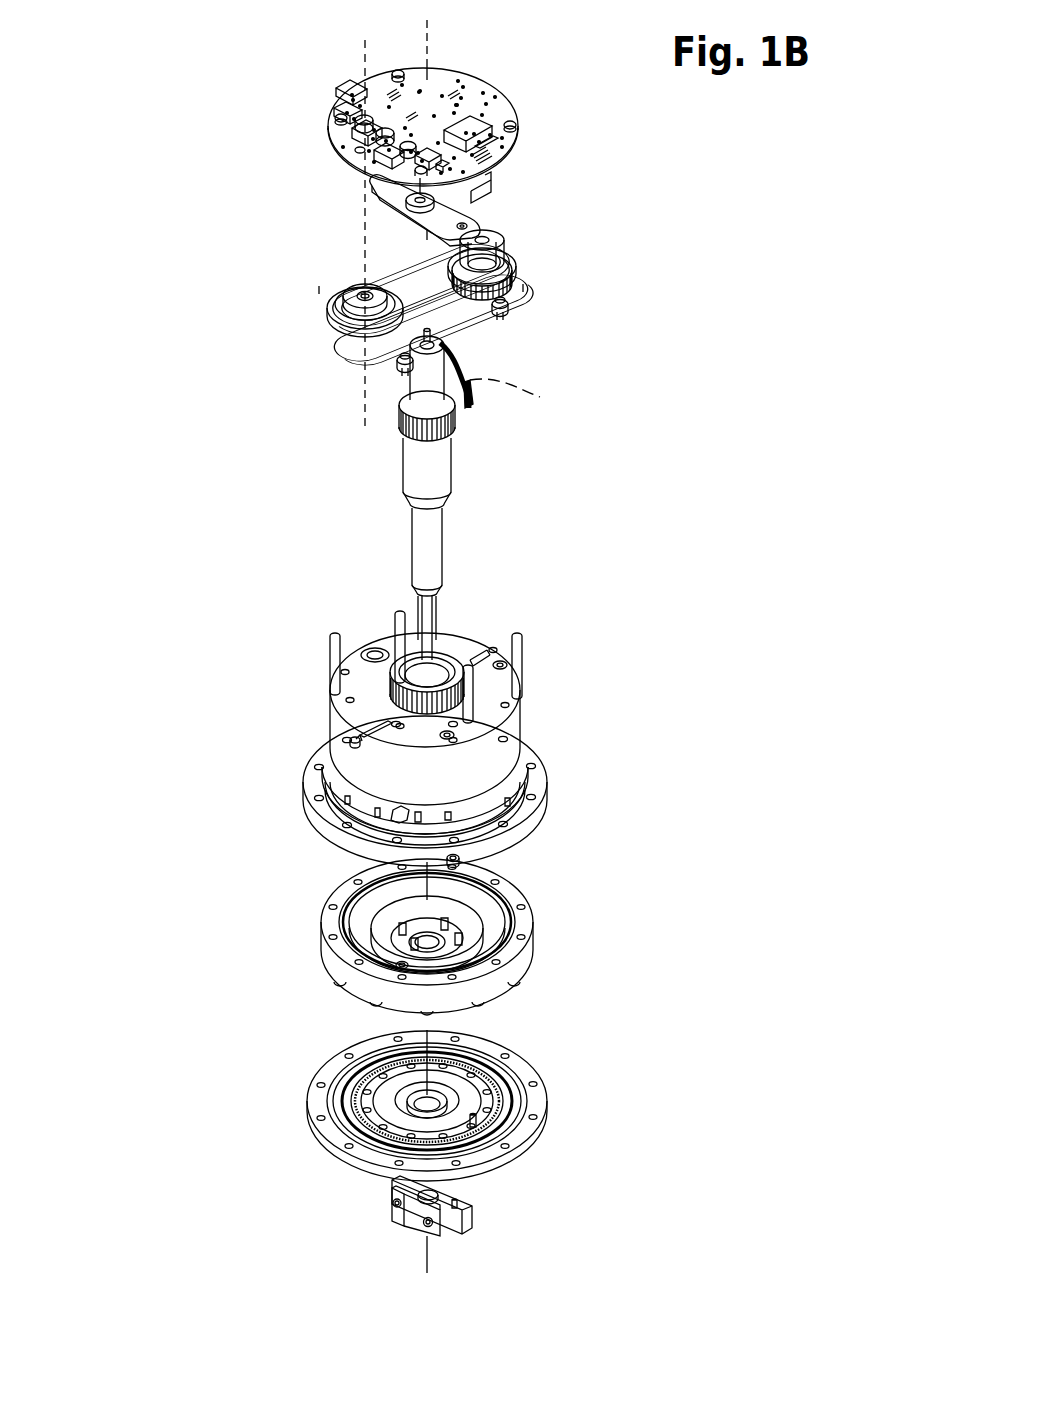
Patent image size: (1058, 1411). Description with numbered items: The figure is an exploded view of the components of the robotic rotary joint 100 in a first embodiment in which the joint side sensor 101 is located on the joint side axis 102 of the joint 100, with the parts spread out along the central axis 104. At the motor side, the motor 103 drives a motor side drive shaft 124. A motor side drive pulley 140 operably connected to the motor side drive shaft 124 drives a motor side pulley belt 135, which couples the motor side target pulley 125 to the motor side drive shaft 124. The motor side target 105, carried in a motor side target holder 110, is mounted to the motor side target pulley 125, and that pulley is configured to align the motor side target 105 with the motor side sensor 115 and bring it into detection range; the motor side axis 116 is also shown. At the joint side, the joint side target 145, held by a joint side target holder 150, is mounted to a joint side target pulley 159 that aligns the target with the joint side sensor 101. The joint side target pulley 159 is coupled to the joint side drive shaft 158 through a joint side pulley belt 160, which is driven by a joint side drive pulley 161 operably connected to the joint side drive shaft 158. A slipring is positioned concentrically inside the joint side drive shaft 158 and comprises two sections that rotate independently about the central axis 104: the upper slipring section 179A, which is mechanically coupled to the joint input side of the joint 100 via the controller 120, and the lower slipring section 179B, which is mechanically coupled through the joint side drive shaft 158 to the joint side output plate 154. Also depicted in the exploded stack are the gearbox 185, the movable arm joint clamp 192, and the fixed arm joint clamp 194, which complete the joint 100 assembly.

The robotic rotary joint 100 is at (160, 925).
The joint side sensor 101 is at (355, 180).
The joint side axis 102 is at (365, 429).
The motor 103 is at (582, 808).
The central axis 104 is at (427, 37).
The motor side target 105 is at (483, 238).
The motor side target holder 110 is at (505, 252).
The motor side sensor 115 is at (475, 213).
The motor side axis 116 is at (540, 398).
The controller 120 is at (476, 72).
The motor side drive shaft 124 is at (345, 738).
The motor side target pulley 125 is at (511, 268).
The motor side pulley belt 135 is at (490, 334).
The motor side drive pulley 140 is at (463, 655).
The joint side target 145 is at (385, 290).
The joint side target holder 150 is at (333, 304).
The joint side output plate 154 is at (565, 1115).
The joint side drive shaft 158 is at (446, 478).
The joint side target pulley 159 is at (330, 320).
The joint side pulley belt 160 is at (378, 272).
The joint side drive pulley 161 is at (452, 348).
The upper slipring section 179A is at (410, 392).
The lower slipring section 179B is at (440, 382).
The gearbox 185 is at (470, 935).
The movable arm joint clamp 192 is at (405, 1224).
The fixed arm joint clamp 194 is at (475, 1232).